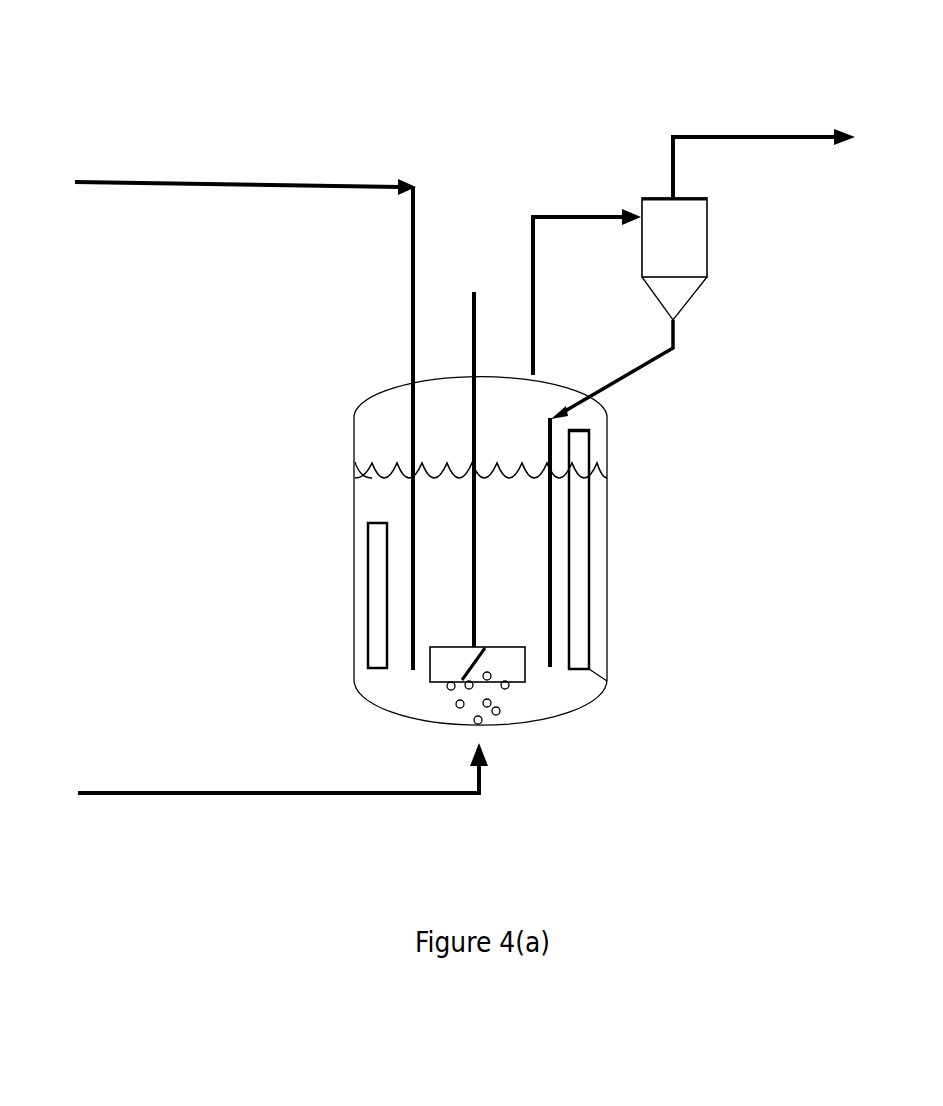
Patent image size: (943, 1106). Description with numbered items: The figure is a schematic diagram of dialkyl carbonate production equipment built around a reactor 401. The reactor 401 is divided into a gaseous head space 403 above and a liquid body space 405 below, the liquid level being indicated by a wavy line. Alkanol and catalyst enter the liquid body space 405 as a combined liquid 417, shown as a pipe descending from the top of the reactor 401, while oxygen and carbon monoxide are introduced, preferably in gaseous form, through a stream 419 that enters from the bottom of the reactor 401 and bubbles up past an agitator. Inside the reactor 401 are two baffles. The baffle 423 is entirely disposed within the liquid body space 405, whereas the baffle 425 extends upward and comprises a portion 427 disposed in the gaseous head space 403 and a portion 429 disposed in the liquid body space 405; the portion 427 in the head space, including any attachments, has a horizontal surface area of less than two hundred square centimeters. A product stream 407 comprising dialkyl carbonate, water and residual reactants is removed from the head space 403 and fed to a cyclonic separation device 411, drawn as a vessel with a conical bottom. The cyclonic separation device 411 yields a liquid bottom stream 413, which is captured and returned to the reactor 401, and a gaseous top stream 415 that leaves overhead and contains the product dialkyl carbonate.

The reactor 401 is at (593, 695).
The gaseous head space 403 is at (438, 418).
The liquid body space 405 is at (442, 593).
The product stream 407 is at (574, 217).
The cyclonic separation device 411 is at (707, 267).
The liquid bottom stream 413 is at (620, 377).
The gaseous top stream 415 is at (762, 137).
The combined liquid 417 is at (184, 180).
The stream 419 is at (207, 795).
The baffle 423 is at (375, 636).
The baffle 425 is at (584, 636).
The baffle portion 427 is at (589, 432).
The baffle portion 429 is at (591, 671).